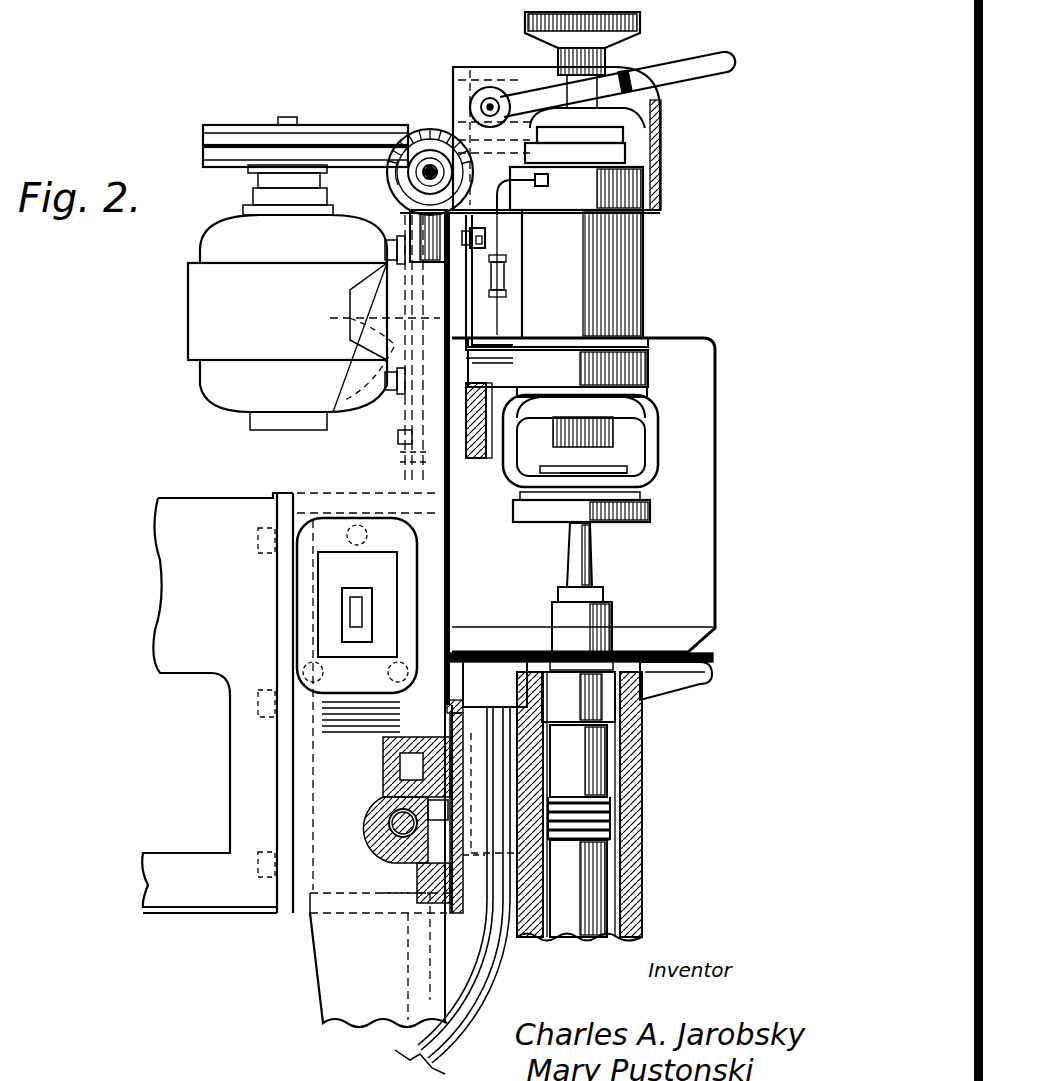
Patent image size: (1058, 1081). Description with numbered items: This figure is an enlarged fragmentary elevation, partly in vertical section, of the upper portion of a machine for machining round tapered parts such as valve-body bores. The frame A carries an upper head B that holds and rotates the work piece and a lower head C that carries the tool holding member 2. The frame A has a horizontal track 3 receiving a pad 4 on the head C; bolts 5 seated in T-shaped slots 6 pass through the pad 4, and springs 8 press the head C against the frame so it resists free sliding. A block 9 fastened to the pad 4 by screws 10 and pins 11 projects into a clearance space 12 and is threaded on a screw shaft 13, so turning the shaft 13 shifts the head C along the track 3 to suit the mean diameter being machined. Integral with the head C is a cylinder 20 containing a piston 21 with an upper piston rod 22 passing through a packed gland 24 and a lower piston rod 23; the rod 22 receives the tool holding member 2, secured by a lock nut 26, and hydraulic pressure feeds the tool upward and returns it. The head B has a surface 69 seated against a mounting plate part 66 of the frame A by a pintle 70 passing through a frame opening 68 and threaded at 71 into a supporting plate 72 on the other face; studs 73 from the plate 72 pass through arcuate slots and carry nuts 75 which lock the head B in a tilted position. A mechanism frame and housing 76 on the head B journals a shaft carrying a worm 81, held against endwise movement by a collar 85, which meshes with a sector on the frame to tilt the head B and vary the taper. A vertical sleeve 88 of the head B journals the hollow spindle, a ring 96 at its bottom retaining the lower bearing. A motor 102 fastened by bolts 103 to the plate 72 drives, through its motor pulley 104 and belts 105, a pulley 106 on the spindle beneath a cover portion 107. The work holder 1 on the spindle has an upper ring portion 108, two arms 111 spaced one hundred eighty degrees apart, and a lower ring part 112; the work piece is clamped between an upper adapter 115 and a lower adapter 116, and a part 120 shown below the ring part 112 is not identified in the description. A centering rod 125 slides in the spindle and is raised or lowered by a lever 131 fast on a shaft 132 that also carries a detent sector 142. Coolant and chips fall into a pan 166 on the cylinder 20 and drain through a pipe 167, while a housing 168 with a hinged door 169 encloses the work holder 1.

The work holder 1 is at (665, 463).
The tool holding member 2 is at (593, 570).
The track 3 is at (418, 892).
The pad 4 is at (398, 872).
The bolts 5 is at (440, 736).
The T-shaped slots 6 is at (383, 758).
The springs 8 is at (492, 725).
The block 9 is at (395, 850).
The screws 10 is at (400, 792).
The pins 11 is at (480, 872).
The clearance space 12 is at (430, 810).
The screw shaft 13 is at (392, 826).
The cylinder 20 is at (625, 792).
The piston 21 is at (635, 840).
The upper piston rod 22 is at (607, 770).
The lower piston rod 23 is at (590, 901).
The packed gland 24 is at (625, 712).
The lock nut 26 is at (603, 597).
The mounting plate part 66 is at (364, 316).
The frame opening 68 is at (418, 458).
The surface 69 is at (455, 322).
The pintle 70 is at (485, 462).
The threaded engagement 71 is at (398, 437).
The supporting plate 72 is at (406, 217).
The studs 73 is at (487, 238).
The nuts 75 is at (505, 256).
The mechanism frame and housing 76 is at (400, 176).
The worm 81 is at (434, 164).
The collar 85 is at (418, 150).
The vertical sleeve 88 is at (607, 303).
The ring 96 is at (650, 372).
The motor 102 is at (200, 305).
The bolts 103 is at (388, 384).
The motor pulley 104 is at (232, 125).
The belts 105 is at (307, 160).
The pulley 106 is at (627, 143).
The cover portion 107 is at (637, 100).
The upper ring portion 108 is at (640, 400).
The arms 111 is at (658, 436).
The lower ring part 112 is at (560, 492).
The upper adapter 115 is at (583, 445).
The lower adapter 116 is at (632, 478).
The base plate 120 is at (632, 518).
The centering rod 125 is at (590, 108).
The lever 131 is at (700, 52).
The shaft 132 is at (494, 98).
The sector 142 is at (462, 82).
The pan 166 is at (710, 664).
The pipe 167 is at (500, 982).
The housing 168 is at (506, 654).
The door 169 is at (720, 560).
The frame A is at (305, 974).
The head B is at (645, 262).
The head C is at (645, 740).